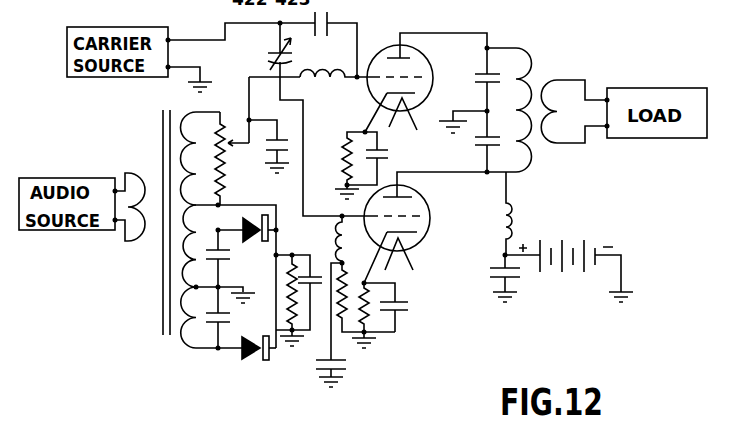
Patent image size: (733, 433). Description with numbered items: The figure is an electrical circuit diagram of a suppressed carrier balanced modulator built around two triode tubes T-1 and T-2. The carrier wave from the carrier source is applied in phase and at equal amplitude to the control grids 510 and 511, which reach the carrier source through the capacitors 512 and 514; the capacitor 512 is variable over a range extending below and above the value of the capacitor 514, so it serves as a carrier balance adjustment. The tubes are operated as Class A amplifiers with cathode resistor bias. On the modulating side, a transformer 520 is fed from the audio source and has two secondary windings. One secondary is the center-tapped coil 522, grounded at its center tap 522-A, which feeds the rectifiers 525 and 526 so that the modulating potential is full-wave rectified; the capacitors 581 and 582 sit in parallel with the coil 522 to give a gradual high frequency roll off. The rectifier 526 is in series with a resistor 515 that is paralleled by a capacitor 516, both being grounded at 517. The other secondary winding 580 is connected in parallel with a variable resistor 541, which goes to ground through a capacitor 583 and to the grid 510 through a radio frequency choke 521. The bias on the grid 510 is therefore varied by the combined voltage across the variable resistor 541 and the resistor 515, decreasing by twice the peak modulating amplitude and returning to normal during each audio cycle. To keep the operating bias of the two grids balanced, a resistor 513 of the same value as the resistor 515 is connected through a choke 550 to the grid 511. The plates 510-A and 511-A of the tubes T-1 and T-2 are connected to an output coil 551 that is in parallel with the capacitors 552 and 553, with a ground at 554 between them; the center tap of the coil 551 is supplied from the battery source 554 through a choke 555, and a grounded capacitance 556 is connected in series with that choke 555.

The control grid 510 is at (379, 74).
The plate 510-A is at (410, 58).
The control grid 511 is at (420, 220).
The plate 511-A is at (412, 197).
The variable capacitor 512 is at (268, 53).
The resistor 513 is at (340, 322).
The capacitor 514 is at (330, 24).
The resistor 515 is at (308, 336).
The capacitor 516 is at (320, 248).
The ground 517 is at (284, 331).
The transformer 520 is at (162, 142).
The radio frequency choke 521 is at (328, 78).
The coil 522 is at (180, 338).
The ground 522-A is at (262, 283).
The rectifier 525 is at (251, 361).
The rectifier 526 is at (243, 224).
The variable resistor 541 is at (221, 176).
The choke 550 is at (336, 236).
The output coil 551 is at (532, 73).
The capacitor 552 is at (474, 75).
The capacitor 553 is at (476, 146).
The battery source 554 is at (448, 126).
The choke 555 is at (513, 220).
The capacitance 556 is at (490, 268).
The secondary winding 580 is at (178, 111).
The capacitor 581 is at (217, 345).
The capacitor 582 is at (224, 256).
The capacitor 583 is at (267, 141).
The triode tube T-1 is at (432, 73).
The triode tube T-2 is at (430, 217).